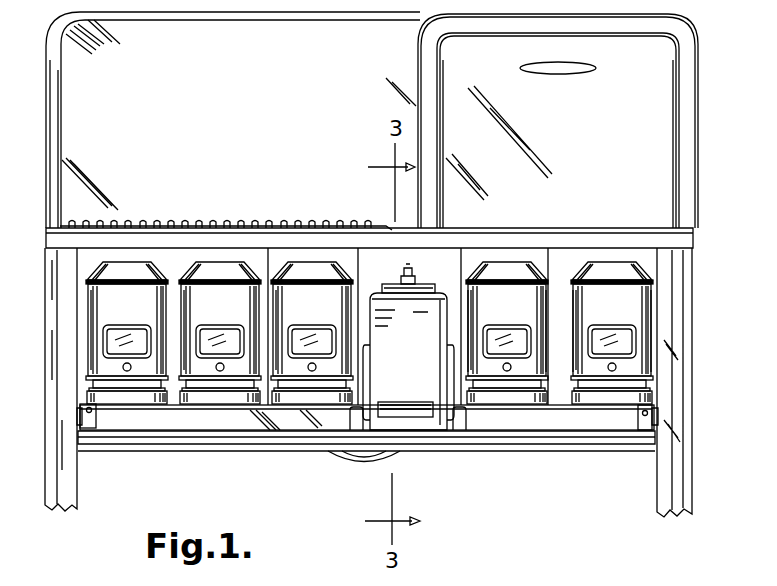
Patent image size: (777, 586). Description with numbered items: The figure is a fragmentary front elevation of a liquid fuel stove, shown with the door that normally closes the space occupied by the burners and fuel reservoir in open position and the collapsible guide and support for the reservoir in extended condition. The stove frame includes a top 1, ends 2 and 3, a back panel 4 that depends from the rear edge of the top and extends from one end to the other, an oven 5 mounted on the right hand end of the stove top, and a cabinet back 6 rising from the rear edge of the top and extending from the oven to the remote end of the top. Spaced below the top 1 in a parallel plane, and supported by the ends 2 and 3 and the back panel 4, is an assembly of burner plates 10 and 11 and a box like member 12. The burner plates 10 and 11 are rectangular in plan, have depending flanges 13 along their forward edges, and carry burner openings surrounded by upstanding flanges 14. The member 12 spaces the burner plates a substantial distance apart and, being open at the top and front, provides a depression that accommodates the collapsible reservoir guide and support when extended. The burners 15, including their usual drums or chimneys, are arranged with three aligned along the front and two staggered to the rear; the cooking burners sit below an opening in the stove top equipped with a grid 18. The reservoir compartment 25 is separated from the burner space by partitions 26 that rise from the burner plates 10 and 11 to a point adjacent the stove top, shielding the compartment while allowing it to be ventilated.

The top 1 is at (568, 245).
The end 2 is at (57, 455).
The end 3 is at (673, 424).
The back panel 4 is at (173, 264).
The oven 5 is at (686, 136).
The cabinet back 6 is at (233, 120).
The burner plate 10 is at (139, 418).
The burner plate 11 is at (620, 418).
The box like member 12 is at (455, 423).
The depending flange 13 is at (276, 420).
The upstanding flange 14 is at (203, 396).
The burner 15 is at (597, 313).
The grid 18 is at (240, 223).
The reservoir compartment 25 is at (374, 262).
The partition 26 is at (305, 262).